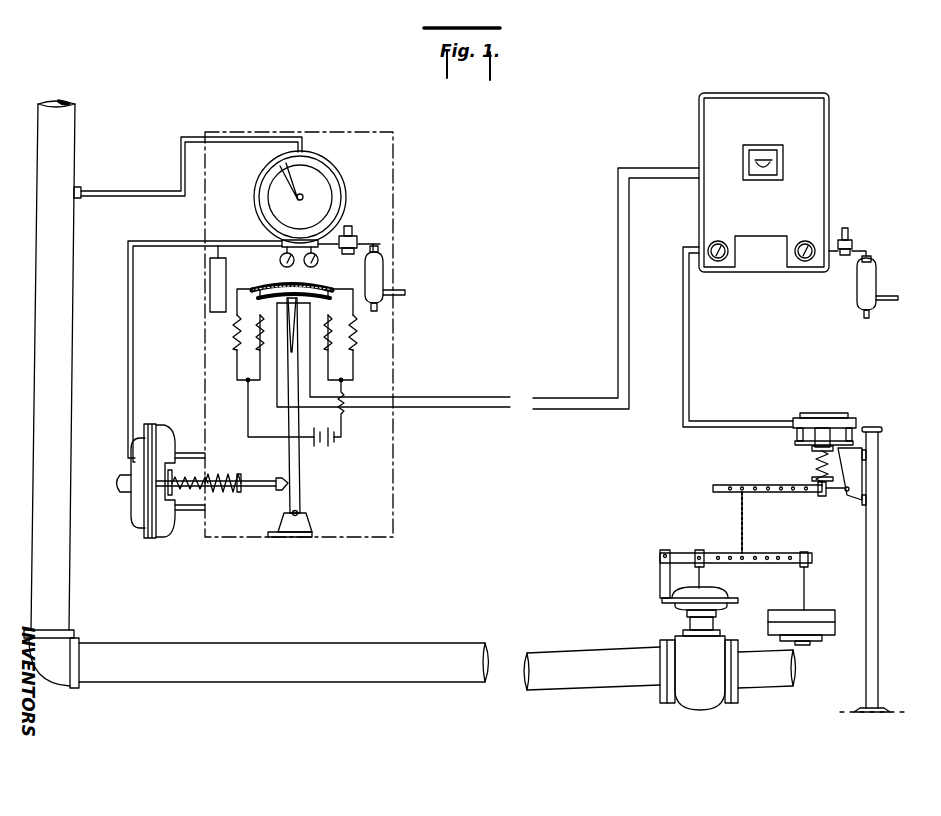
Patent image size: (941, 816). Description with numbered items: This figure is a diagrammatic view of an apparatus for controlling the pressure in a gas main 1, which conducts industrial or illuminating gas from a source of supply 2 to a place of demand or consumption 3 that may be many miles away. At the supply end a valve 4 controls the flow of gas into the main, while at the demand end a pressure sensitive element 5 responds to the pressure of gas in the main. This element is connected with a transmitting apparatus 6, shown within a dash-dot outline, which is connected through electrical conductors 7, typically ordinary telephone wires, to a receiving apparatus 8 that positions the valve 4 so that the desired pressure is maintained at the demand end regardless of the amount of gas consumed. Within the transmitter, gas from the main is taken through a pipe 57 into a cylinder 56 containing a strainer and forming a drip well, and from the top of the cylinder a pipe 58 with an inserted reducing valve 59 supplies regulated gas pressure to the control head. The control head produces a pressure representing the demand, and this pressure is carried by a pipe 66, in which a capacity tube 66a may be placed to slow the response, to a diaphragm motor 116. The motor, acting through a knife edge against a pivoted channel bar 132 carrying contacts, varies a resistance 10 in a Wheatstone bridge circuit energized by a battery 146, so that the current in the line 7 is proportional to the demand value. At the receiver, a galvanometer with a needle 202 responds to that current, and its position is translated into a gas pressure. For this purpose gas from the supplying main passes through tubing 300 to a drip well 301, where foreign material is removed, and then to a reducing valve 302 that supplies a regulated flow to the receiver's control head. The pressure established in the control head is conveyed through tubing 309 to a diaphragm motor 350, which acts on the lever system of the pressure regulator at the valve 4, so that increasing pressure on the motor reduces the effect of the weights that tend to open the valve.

The gas main 1 is at (344, 640).
The source of supply 2 is at (768, 692).
The place of demand or consumption 3 is at (36, 107).
The valve 4 is at (660, 632).
The pressure sensitive element 5 is at (81, 193).
The transmitting apparatus 6 is at (397, 188).
The electrical conductors 7 is at (541, 392).
The receiving apparatus 8 is at (831, 125).
The resistance 10 is at (268, 280).
The cylinder 56 is at (383, 273).
The pipe 57 is at (393, 297).
The pipe 58 is at (380, 244).
The reducing valve 59 is at (350, 234).
The pipe 66 is at (128, 287).
The capacity tube 66a is at (212, 287).
The diaphragm motor 116 is at (128, 493).
The channel bar 132 is at (289, 459).
The battery 146 is at (324, 446).
The needle 202 is at (760, 166).
The tubing 300 is at (886, 300).
The drip well 301 is at (868, 284).
The reducing valve 302 is at (852, 238).
The tubing 309 is at (688, 358).
The diaphragm motor 350 is at (836, 412).